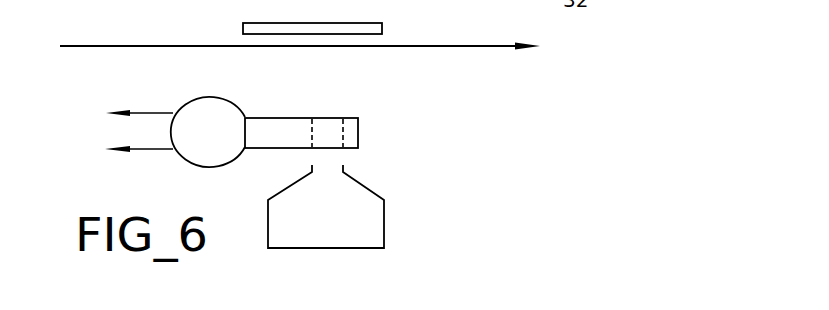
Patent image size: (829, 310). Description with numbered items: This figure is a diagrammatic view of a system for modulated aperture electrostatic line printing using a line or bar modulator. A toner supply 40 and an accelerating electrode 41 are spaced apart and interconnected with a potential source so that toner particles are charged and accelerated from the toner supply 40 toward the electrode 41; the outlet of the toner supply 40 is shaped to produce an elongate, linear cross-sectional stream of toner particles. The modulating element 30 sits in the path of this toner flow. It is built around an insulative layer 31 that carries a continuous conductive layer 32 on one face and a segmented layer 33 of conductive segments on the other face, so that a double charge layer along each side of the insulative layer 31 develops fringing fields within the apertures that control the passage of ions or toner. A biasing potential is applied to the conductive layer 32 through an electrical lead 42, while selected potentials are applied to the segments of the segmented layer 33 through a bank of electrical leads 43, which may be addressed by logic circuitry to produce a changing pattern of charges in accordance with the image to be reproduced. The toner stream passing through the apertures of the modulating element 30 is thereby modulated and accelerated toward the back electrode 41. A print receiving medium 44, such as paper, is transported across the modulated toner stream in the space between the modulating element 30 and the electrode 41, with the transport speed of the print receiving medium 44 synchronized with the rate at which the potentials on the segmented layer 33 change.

The modulating element 30 is at (296, 104).
The insulative layer 31 is at (361, 134).
The continuous conductive layer 32 is at (348, 150).
The segmented layer 33 is at (322, 118).
The toner supply 40 is at (384, 222).
The accelerating electrode 41 is at (382, 27).
The electrical lead 42 is at (160, 152).
The bank of electrical leads 43 is at (153, 112).
The print receiving medium 44 is at (491, 48).